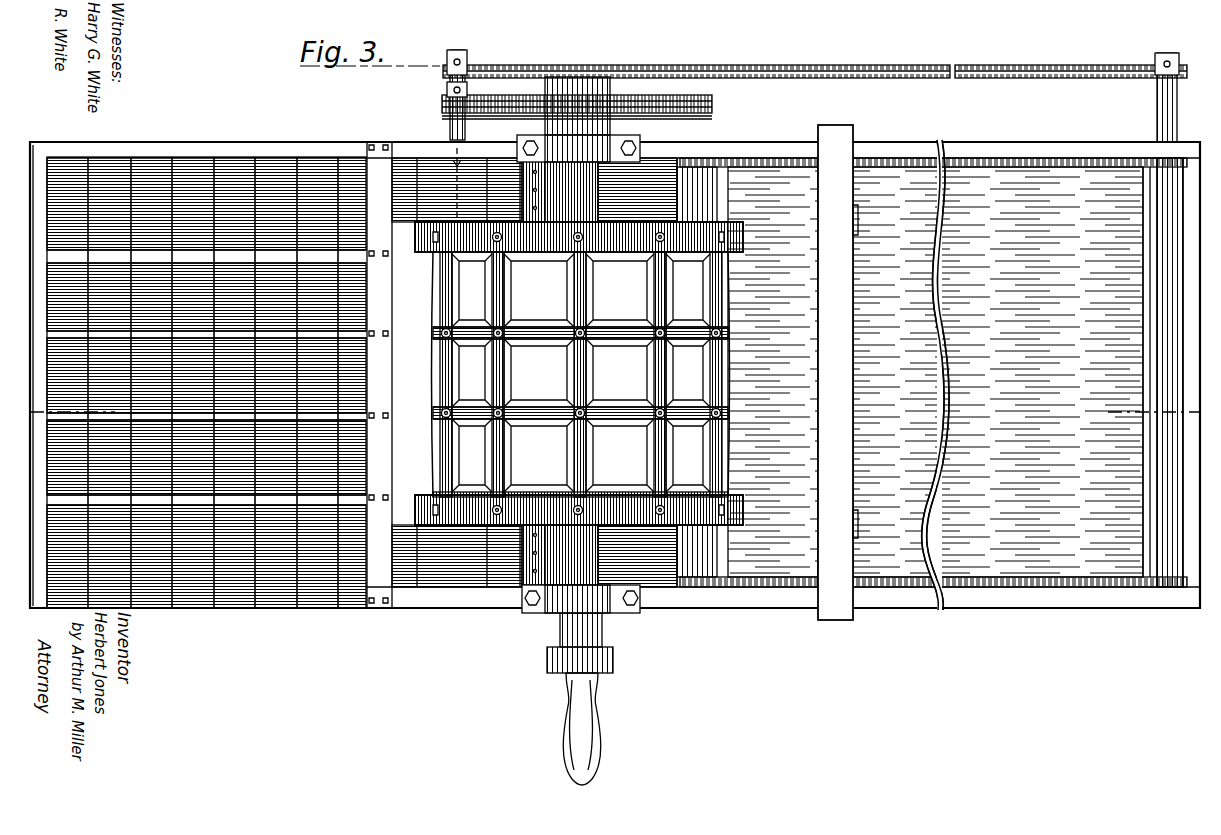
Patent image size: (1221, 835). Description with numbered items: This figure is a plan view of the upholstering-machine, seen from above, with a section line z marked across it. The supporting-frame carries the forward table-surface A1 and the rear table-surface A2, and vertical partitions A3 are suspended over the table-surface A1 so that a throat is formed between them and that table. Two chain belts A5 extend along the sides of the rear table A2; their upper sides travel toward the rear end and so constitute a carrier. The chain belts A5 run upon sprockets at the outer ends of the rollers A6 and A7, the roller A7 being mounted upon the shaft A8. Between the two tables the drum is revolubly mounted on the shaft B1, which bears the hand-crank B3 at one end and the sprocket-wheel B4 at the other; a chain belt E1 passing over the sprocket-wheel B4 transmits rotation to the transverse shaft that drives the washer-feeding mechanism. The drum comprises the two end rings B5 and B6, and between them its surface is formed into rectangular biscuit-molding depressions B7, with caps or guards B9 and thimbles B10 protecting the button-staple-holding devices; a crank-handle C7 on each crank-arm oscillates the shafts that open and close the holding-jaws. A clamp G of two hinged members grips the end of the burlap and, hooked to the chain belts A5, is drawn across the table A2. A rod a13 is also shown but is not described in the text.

The table-surface A1 is at (615, 375).
The table-surface A2 is at (998, 372).
The vertical partitions A3 is at (220, 262).
The chain belts A5 is at (1033, 70).
The roller A6 is at (715, 203).
The roller A7 is at (1166, 186).
The shaft A8 is at (1166, 99).
The rod a13 is at (442, 183).
The shaft B1 is at (566, 362).
The hand-crank B3 is at (600, 706).
The sprocket-wheel B4 is at (712, 101).
The end ring B5 is at (743, 249).
The end ring B6 is at (743, 516).
The biscuit-molding depressions B7 is at (581, 374).
The caps or guards B9 is at (660, 328).
The thimbles B10 is at (502, 237).
The crank-handle C7 is at (471, 588).
The chain belt E1 is at (708, 113).
The clamp G is at (848, 372).
The section line z is at (610, 413).